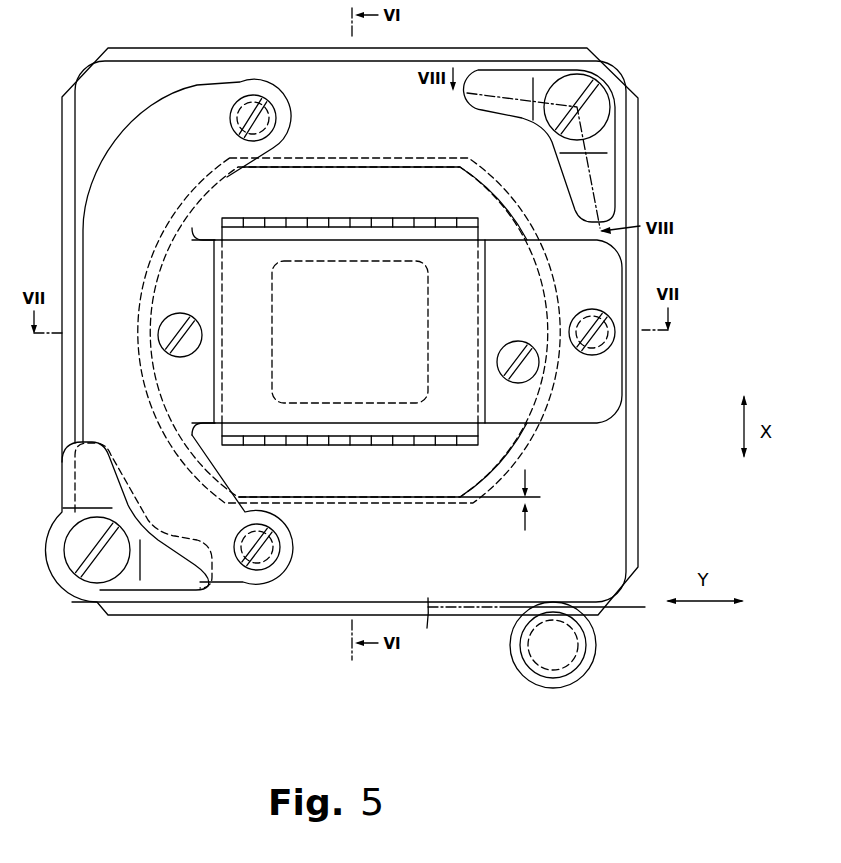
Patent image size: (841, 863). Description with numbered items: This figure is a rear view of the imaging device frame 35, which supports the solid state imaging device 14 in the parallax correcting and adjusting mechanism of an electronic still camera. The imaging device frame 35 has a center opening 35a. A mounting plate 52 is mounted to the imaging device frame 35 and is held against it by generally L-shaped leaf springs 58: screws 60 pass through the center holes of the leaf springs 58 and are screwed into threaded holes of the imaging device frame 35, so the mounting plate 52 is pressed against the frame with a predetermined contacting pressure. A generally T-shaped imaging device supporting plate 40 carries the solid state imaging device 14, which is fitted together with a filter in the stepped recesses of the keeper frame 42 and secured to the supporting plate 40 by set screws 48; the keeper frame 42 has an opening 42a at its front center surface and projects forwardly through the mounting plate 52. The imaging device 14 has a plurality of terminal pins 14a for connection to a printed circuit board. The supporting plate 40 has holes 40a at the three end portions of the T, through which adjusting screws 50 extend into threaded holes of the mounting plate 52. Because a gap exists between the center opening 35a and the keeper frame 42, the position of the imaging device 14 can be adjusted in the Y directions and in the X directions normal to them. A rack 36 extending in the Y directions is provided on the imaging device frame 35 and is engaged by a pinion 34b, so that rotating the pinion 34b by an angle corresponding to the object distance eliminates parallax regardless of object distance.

The imaging device frame 35 is at (195, 47).
The mounting plate 52 is at (240, 61).
The leaf spring 58 is at (498, 70).
The screw 60 is at (572, 70).
The adjusting screw 50 is at (291, 114).
The hole 40a is at (236, 132).
The opening 42a is at (330, 262).
The terminal pin 14a is at (434, 220).
The set screw 48 is at (179, 312).
The keeper frame 42 is at (328, 504).
The imaging device supporting plate 40 is at (377, 430).
The solid state imaging device 14 is at (422, 424).
The center opening 35a is at (451, 503).
The rack 36 is at (456, 612).
The pinion 34b is at (553, 652).